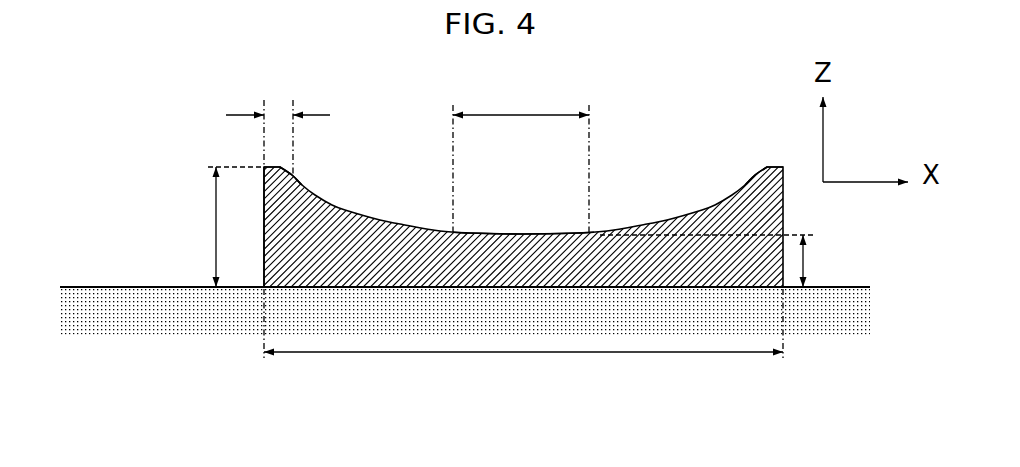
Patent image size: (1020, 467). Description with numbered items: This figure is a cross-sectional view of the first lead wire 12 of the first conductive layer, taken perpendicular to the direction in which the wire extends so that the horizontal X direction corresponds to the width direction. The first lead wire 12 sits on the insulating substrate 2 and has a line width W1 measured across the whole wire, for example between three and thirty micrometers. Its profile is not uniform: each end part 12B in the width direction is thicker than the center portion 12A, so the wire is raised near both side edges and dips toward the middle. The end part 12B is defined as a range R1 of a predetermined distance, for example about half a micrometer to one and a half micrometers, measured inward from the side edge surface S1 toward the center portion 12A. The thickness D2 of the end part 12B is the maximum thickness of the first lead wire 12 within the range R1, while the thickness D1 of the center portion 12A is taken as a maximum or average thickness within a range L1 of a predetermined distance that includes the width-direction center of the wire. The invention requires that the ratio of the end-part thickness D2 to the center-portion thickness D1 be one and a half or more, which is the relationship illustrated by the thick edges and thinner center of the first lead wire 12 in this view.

The substrate 2 is at (118, 318).
The first lead wire 12 is at (723, 263).
The center portion 12A is at (557, 200).
The end part 12B is at (302, 167).
The side edge surface S1 is at (267, 240).
The range R1 is at (278, 127).
The range L1 is at (521, 155).
The thickness of the center portion D1 is at (725, 261).
The thickness of the end part D2 is at (216, 227).
The line width W1 is at (523, 343).